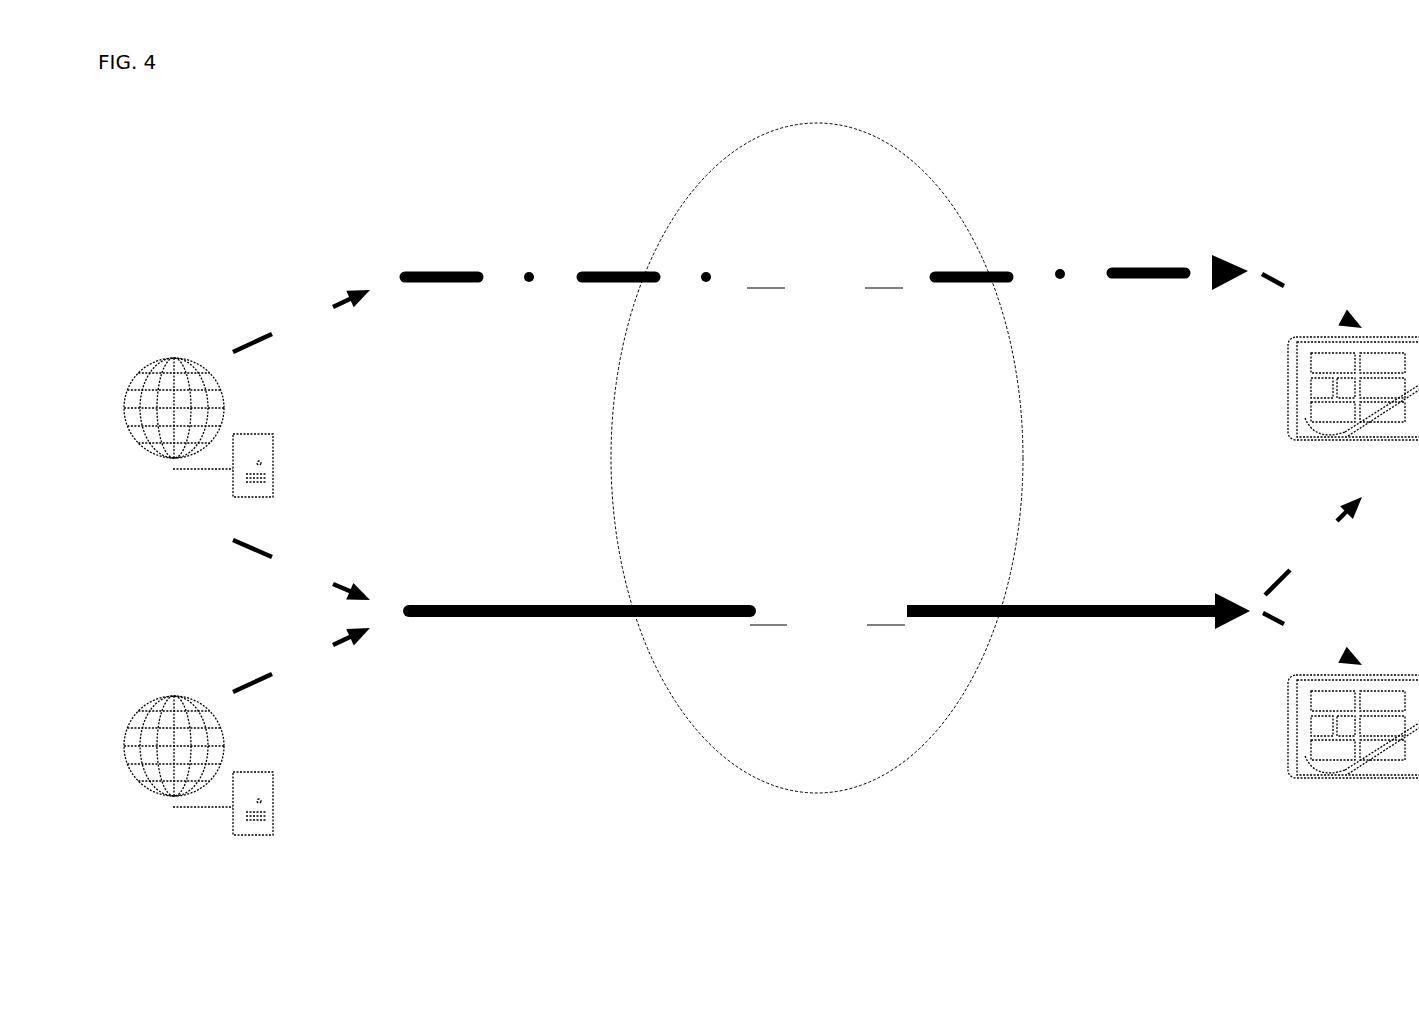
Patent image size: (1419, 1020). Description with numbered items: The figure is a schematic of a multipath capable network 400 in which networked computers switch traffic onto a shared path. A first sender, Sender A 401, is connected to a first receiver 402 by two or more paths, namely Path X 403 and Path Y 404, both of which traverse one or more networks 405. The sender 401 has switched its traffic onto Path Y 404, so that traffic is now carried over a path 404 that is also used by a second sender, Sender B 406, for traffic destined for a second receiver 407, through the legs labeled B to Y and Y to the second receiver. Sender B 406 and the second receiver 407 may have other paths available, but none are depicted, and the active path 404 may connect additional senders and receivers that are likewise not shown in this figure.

The multipath capable network 400 is at (360, 72).
The Sender 401 is at (233, 484).
The Receiver 1 402 is at (1287, 405).
The Path X 403 is at (585, 280).
The Path Y 404 is at (600, 617).
The one or more Networks 405 is at (798, 485).
The Sender B 406 is at (233, 814).
The Receiver 2 407 is at (1287, 725).